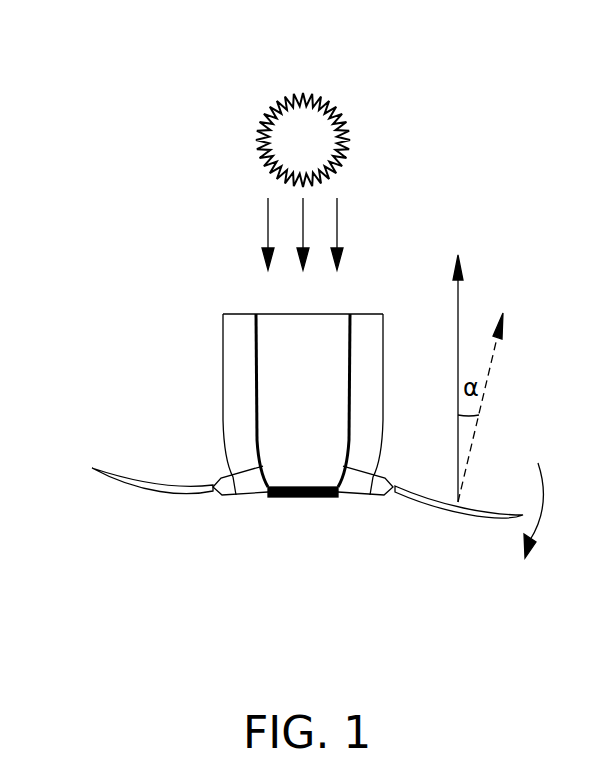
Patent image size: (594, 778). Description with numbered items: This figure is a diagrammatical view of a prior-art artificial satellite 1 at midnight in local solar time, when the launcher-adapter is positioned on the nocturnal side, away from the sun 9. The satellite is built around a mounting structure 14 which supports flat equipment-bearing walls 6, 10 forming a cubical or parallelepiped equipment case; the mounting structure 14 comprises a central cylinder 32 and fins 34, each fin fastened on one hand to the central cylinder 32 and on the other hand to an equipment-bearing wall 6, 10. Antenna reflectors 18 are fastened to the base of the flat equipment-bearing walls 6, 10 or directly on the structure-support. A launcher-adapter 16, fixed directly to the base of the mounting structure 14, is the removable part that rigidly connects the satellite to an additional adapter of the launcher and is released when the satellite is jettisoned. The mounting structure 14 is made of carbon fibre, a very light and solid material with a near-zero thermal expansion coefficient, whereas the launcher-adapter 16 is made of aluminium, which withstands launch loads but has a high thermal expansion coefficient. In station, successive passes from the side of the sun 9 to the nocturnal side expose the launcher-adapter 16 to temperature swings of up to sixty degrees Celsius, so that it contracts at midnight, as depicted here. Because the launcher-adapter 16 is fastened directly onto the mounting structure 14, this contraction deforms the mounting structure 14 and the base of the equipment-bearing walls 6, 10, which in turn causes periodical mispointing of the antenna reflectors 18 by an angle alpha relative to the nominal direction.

The artificial satellite 1 is at (170, 608).
The flat equipment-bearing wall 6 is at (384, 408).
The sun 9 is at (353, 113).
The flat equipment-bearing wall 10 is at (224, 381).
The mounting structure 14 is at (256, 343).
The launcher-adapter 16 is at (289, 498).
The antenna reflector 18 is at (125, 490).
The central cylinder 32 is at (257, 428).
The fin 34 is at (356, 494).